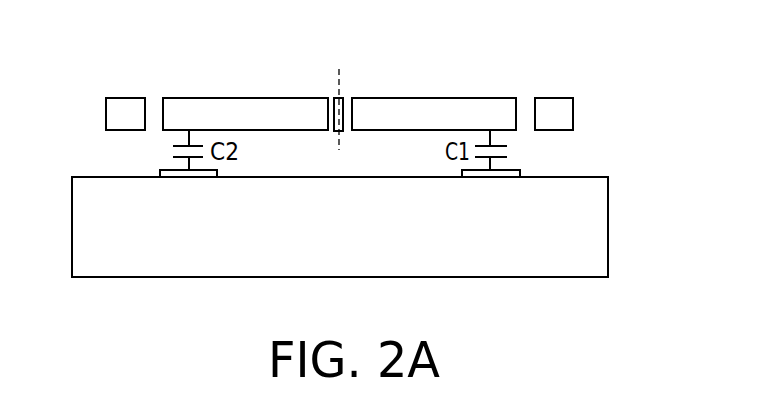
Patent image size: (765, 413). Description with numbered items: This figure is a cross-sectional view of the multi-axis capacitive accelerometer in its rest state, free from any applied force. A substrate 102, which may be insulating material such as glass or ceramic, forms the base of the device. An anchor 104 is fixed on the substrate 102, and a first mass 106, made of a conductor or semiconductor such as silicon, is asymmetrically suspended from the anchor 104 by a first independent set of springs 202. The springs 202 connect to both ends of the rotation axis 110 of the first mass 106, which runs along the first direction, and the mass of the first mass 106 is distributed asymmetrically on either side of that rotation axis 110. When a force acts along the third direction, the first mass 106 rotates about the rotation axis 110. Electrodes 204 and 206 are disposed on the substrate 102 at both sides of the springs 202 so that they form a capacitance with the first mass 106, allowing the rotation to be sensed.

The substrate 102 is at (586, 227).
The anchor 104 is at (127, 108).
The first mass 106 is at (215, 109).
The rotation axis 110 is at (340, 93).
The first independent set of springs 202 is at (344, 117).
The electrode 204 is at (158, 173).
The electrode 206 is at (522, 173).